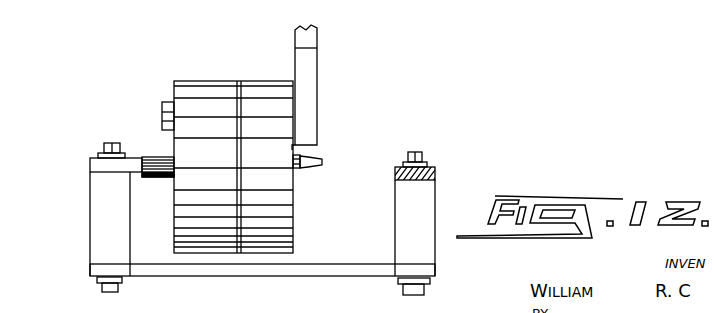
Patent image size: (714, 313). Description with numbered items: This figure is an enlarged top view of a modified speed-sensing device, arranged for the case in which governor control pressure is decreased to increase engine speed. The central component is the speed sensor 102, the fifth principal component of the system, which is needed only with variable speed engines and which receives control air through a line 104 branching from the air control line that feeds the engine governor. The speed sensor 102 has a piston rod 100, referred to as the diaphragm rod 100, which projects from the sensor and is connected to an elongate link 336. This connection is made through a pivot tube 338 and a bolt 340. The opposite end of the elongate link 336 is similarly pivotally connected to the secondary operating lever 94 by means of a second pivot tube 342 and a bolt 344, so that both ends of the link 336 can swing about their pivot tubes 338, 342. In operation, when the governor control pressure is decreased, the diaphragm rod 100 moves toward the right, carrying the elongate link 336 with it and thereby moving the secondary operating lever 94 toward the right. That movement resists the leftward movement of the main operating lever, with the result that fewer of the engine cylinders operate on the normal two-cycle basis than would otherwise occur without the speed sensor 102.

The secondary operating lever 94 is at (434, 173).
The piston rod 100 is at (154, 157).
The speed sensor 102 is at (229, 74).
The line 104 is at (312, 168).
The elongate link 336 is at (231, 276).
The pivot tube 338 is at (90, 240).
The bolt 340 is at (103, 292).
The pivot tube 342 is at (435, 238).
The bolt 344 is at (425, 294).